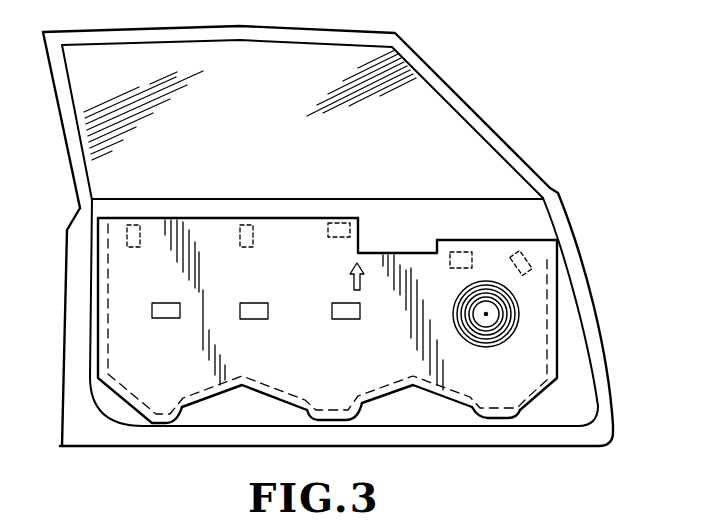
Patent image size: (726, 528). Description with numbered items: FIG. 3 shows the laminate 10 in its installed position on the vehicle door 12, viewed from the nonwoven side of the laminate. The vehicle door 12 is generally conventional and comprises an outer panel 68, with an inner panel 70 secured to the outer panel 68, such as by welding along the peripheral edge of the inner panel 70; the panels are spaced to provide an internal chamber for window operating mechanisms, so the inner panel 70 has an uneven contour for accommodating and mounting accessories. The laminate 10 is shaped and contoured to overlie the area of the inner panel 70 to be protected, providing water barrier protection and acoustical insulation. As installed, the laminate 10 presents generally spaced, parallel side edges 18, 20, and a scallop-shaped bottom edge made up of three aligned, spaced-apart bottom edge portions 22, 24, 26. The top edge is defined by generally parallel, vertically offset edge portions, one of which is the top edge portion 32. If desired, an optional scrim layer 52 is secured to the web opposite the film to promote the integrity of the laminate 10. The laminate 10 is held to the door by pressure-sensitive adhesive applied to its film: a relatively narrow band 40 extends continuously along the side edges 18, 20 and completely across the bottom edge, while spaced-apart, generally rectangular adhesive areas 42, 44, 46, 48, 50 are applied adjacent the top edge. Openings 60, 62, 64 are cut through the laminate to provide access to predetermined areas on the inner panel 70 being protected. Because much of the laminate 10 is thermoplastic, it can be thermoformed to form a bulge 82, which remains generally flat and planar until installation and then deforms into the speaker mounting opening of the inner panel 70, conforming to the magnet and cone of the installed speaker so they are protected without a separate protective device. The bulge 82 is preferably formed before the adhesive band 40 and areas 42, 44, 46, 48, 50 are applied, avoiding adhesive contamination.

The laminate 10 is at (535, 240).
The vehicle door 12 is at (490, 118).
The side edge 18 is at (557, 309).
The side edge 20 is at (97, 262).
The bottom edge portion 22 is at (502, 420).
The bottom edge portion 24 is at (315, 423).
The bottom edge portion 26 is at (158, 424).
The top edge portion 32 is at (395, 250).
The band of adhesive 40 is at (100, 340).
The adhesive area 42 is at (515, 254).
The adhesive area 44 is at (455, 250).
The adhesive area 46 is at (348, 220).
The adhesive area 48 is at (247, 222).
The adhesive area 50 is at (140, 222).
The scrim layer 52 is at (530, 373).
The opening 60 is at (345, 319).
The opening 62 is at (256, 319).
The opening 64 is at (165, 318).
The outer panel 68 is at (65, 308).
The inner panel 70 is at (97, 397).
The bulge 82 is at (521, 325).